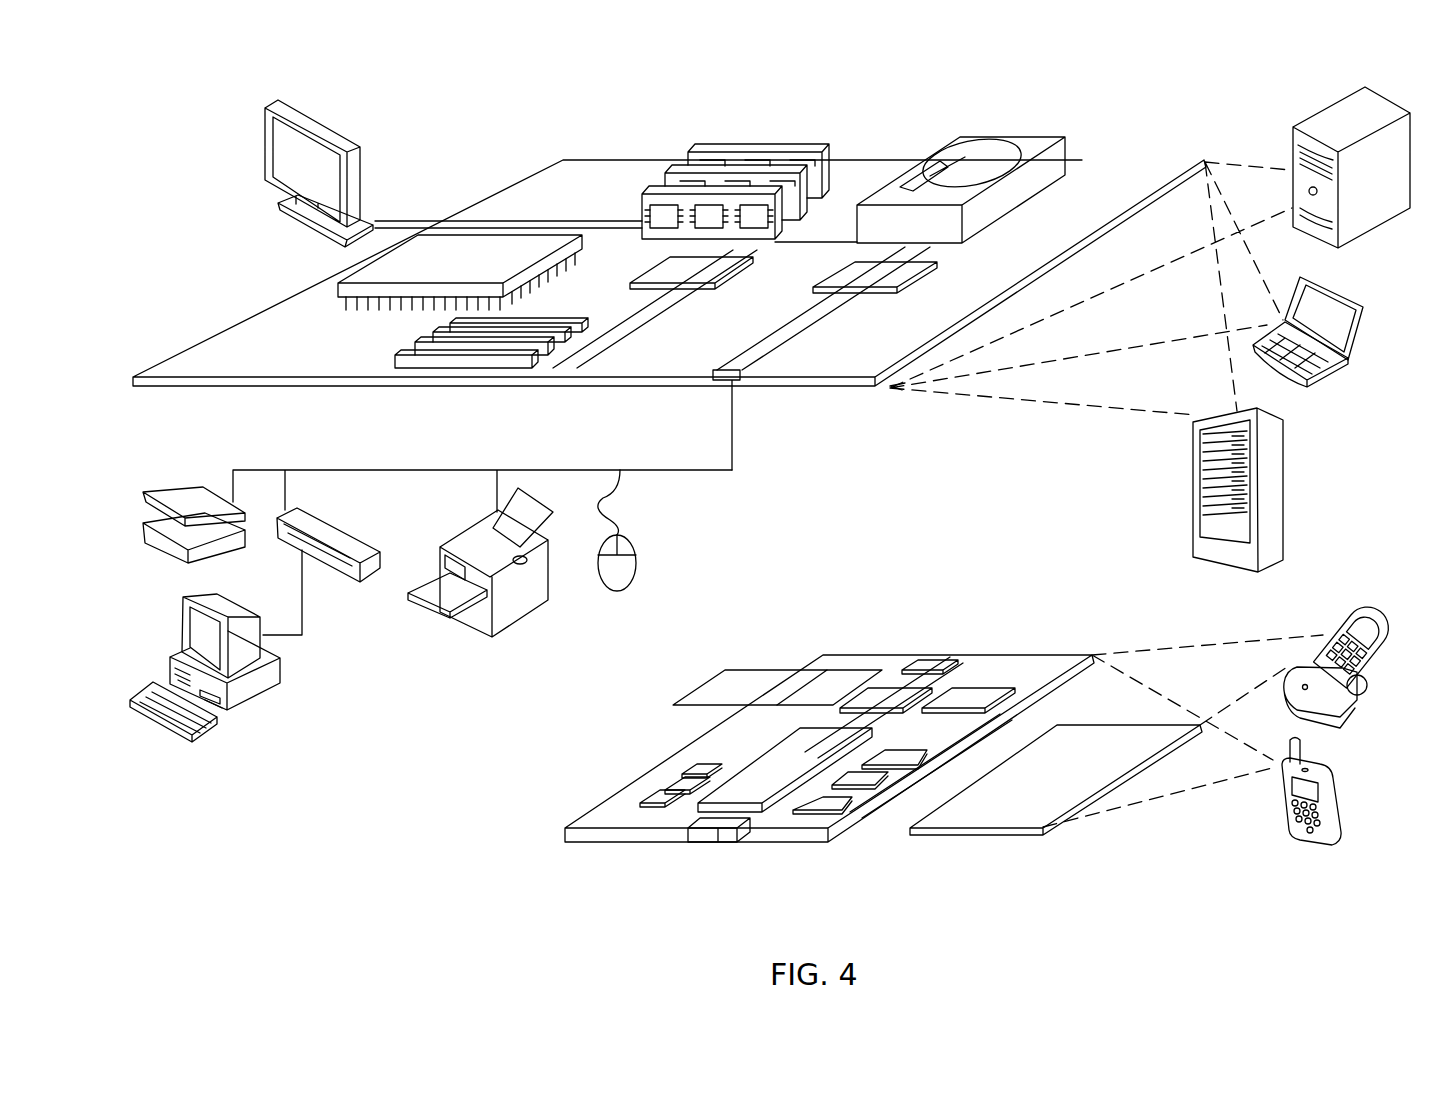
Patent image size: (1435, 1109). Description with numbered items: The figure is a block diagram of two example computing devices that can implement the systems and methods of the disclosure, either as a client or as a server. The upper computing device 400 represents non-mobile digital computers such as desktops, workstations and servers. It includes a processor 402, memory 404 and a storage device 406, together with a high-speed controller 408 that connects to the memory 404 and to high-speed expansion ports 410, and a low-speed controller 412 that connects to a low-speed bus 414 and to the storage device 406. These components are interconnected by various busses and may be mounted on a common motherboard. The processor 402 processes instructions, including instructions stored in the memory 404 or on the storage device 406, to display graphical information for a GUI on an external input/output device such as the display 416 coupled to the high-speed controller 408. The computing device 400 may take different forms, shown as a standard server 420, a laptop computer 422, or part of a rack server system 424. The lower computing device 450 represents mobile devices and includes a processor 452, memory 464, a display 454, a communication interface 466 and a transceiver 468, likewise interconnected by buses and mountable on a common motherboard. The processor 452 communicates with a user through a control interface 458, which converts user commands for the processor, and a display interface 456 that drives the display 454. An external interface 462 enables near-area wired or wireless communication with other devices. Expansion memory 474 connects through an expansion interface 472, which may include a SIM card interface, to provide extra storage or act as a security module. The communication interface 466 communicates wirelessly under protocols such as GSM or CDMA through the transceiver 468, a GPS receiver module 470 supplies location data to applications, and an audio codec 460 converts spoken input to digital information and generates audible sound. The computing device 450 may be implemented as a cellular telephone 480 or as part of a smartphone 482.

The computing device 400 is at (177, 122).
The processor 402 is at (340, 288).
The memory 404 is at (695, 152).
The storage device 406 is at (948, 146).
The high-speed controller 408 is at (662, 272).
The high-speed expansion ports 410 is at (413, 350).
The low-speed controller 412 is at (855, 273).
The low-speed bus 414 is at (747, 383).
The display 416 is at (268, 106).
The standard server 420 is at (1292, 147).
The laptop computer 422 is at (1362, 306).
The rack server system 424 is at (1193, 512).
The computing device 450 is at (543, 836).
The processor 452 is at (755, 792).
The display 454 is at (1010, 812).
The display interface 456 is at (833, 812).
The control interface 458 is at (865, 781).
The audio codec 460 is at (893, 756).
The external interface 462 is at (718, 833).
The memory 464 is at (665, 782).
The communication interface 466 is at (885, 697).
The transceiver 468 is at (968, 697).
The GPS receiver module 470 is at (938, 658).
The expansion interface 472 is at (807, 672).
The expansion memory 474 is at (718, 670).
The cellular telephone 480 is at (1340, 605).
The smartphone 482 is at (1275, 797).